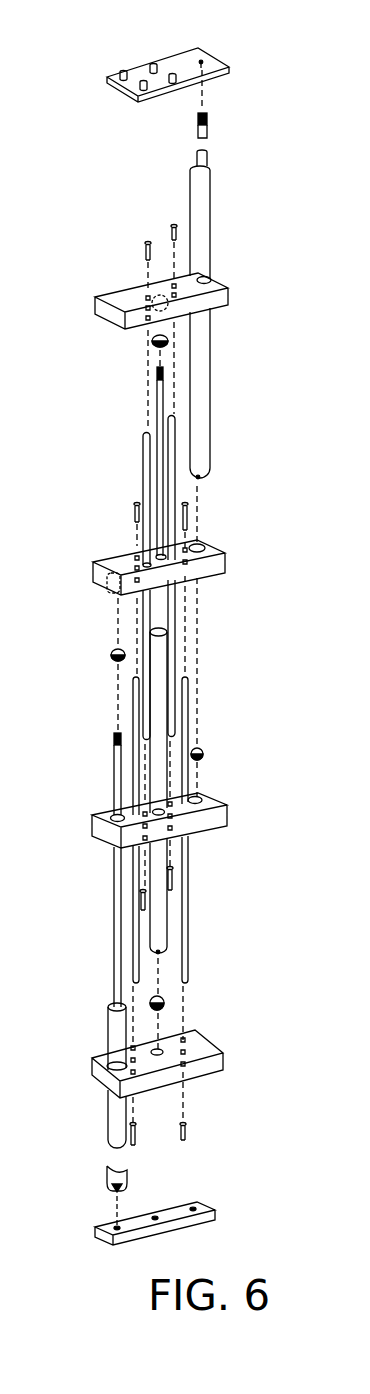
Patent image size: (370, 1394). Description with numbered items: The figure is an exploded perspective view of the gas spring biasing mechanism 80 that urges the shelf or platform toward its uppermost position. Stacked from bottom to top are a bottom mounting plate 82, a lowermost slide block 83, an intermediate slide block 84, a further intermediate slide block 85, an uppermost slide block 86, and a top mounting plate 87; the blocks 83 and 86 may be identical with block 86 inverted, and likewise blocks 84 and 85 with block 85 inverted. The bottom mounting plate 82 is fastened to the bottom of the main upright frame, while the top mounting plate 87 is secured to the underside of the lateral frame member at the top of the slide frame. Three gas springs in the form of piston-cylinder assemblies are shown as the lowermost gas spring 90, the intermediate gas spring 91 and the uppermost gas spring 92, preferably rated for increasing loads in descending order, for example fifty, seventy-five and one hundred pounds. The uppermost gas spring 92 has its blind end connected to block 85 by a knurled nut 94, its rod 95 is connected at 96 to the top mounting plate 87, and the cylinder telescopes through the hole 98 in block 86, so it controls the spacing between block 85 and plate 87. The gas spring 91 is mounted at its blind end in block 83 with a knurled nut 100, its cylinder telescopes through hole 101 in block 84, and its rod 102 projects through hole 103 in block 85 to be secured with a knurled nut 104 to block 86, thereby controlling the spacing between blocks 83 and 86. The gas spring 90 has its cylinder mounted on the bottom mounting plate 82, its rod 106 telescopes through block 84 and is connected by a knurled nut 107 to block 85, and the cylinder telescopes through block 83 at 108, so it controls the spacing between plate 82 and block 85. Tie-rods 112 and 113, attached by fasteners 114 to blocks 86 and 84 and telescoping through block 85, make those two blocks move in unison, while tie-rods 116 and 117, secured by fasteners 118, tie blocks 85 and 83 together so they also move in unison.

The spring biasing mechanism 80 is at (224, 630).
The bottom mounting plate 82 is at (215, 1212).
The lowermost slide block 83 is at (223, 1061).
The intermediate slide block 84 is at (227, 812).
The further intermediate slide block 85 is at (225, 565).
The uppermost slide block 86 is at (228, 298).
The top mounting plate 87 is at (229, 70).
The lowermost gas spring 90 is at (113, 1037).
The intermediate gas spring 91 is at (159, 708).
The uppermost gas spring 92 is at (201, 355).
The knurled nut 94 is at (203, 755).
The rod 95 is at (207, 127).
The connection 96 is at (202, 62).
The hole 98 is at (207, 282).
The knurled nut 100 is at (164, 1002).
The hole 101 is at (158, 813).
The rod 102 is at (161, 432).
The hole 103 is at (163, 557).
The knurled nut 104 is at (152, 345).
The rod 106 is at (117, 893).
The knurled nut 107 is at (111, 657).
The telescoping location 108 is at (118, 1068).
The tie-rod 112 is at (143, 470).
The tie-rod 113 is at (176, 487).
The fasteners 114 is at (147, 256).
The tie-rod 116 is at (133, 962).
The tie-rod 117 is at (188, 918).
The fasteners 118 is at (190, 513).